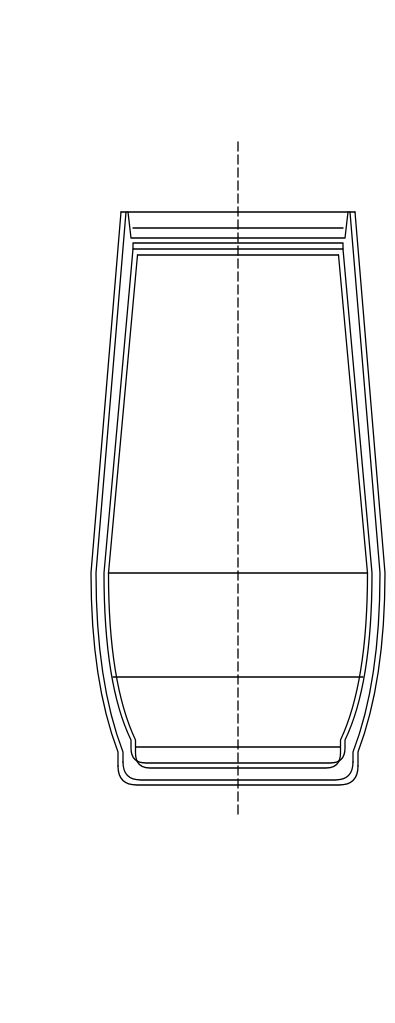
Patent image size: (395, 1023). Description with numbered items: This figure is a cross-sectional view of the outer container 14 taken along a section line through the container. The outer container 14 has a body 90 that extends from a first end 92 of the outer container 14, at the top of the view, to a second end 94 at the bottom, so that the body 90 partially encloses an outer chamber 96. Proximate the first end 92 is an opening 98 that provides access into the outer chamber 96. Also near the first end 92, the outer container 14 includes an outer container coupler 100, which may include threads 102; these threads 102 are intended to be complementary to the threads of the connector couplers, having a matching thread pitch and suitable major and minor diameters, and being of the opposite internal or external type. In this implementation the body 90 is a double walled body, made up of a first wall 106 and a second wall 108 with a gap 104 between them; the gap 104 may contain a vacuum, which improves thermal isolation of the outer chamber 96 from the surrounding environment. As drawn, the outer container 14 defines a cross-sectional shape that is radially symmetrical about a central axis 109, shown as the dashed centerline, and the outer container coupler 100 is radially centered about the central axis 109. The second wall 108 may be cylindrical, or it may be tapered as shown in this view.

The outer container 14 is at (88, 311).
The body 90 is at (97, 380).
The first end 92 is at (127, 212).
The second end 94 is at (126, 785).
The outer chamber 96 is at (130, 468).
The opening 98 is at (309, 212).
The outer container coupler 100 is at (160, 243).
The threads 102 is at (201, 243).
The gap 104 is at (108, 545).
The first wall 106 is at (108, 610).
The second wall 108 is at (103, 663).
The central axis 109 is at (239, 167).